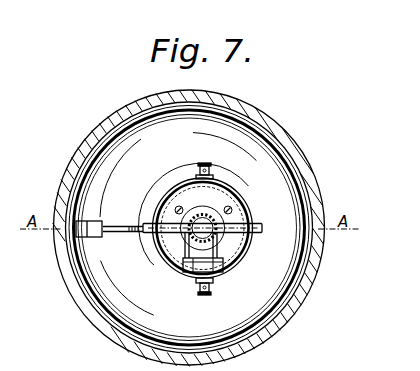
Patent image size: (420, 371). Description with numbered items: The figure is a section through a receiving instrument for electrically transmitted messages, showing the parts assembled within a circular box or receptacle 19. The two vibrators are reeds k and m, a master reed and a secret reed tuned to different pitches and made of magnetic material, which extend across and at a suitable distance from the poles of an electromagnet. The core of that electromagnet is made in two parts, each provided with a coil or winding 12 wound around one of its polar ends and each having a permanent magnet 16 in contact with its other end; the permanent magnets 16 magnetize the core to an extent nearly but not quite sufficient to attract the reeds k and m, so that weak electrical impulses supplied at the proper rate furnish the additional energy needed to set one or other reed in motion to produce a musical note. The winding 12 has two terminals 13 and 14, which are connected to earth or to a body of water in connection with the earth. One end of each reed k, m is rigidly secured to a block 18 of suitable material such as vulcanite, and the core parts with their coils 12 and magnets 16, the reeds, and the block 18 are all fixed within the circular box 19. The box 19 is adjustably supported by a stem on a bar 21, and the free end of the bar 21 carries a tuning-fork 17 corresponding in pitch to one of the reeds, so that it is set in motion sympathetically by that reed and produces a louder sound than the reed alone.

The winding 12 is at (211, 251).
The terminal 13 is at (212, 173).
The terminal 14 is at (212, 290).
The permanent magnet 16 is at (236, 196).
The tuning-fork 17 is at (160, 238).
The block 18 is at (247, 252).
The circular box 19 is at (176, 188).
The bar 21 is at (96, 228).
The master reed k is at (148, 250).
The secret reed m is at (241, 261).